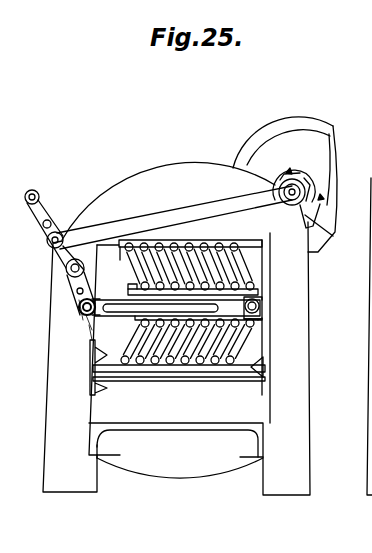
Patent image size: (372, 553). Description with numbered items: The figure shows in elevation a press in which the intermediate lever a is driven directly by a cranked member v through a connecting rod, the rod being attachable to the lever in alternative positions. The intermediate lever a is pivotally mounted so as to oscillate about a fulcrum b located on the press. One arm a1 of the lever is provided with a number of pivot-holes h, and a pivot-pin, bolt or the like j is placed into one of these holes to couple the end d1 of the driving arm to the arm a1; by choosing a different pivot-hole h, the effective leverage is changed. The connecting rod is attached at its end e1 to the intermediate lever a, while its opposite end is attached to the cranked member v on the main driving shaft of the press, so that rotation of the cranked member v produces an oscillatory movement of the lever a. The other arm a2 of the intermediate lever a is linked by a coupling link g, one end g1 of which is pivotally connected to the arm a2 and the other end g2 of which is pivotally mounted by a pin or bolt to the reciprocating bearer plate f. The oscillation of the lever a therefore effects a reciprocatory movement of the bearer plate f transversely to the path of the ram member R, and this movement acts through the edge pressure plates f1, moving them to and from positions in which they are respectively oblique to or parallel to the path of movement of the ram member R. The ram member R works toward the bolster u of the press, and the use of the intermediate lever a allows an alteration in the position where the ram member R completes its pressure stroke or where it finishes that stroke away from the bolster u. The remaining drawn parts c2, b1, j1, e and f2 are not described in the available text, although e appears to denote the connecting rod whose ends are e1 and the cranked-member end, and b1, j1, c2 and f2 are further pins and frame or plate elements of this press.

The pivot-holes h is at (32, 190).
The arm of intermediate lever a1 is at (47, 219).
The end of arm d1 is at (59, 222).
The pivot-pin j is at (50, 251).
The end of connecting rod e1 is at (194, 208).
The hub c2 is at (292, 179).
The cranked member v is at (302, 181).
The fulcrum b is at (70, 273).
The intermediate lever a is at (77, 289).
The crank pin b1 is at (79, 302).
The arm of intermediate lever a2 is at (83, 307).
The pivot j1 is at (88, 316).
The end of coupling link g1 is at (90, 326).
The frame e is at (50, 436).
The reciprocating bearer plate f is at (262, 302).
The slotted rod f2 is at (262, 307).
The other end of coupling link g2 is at (262, 312).
The coupling link g is at (265, 322).
The ram member R is at (265, 378).
The edge pressure plates f1 is at (168, 336).
The bolster u is at (267, 440).